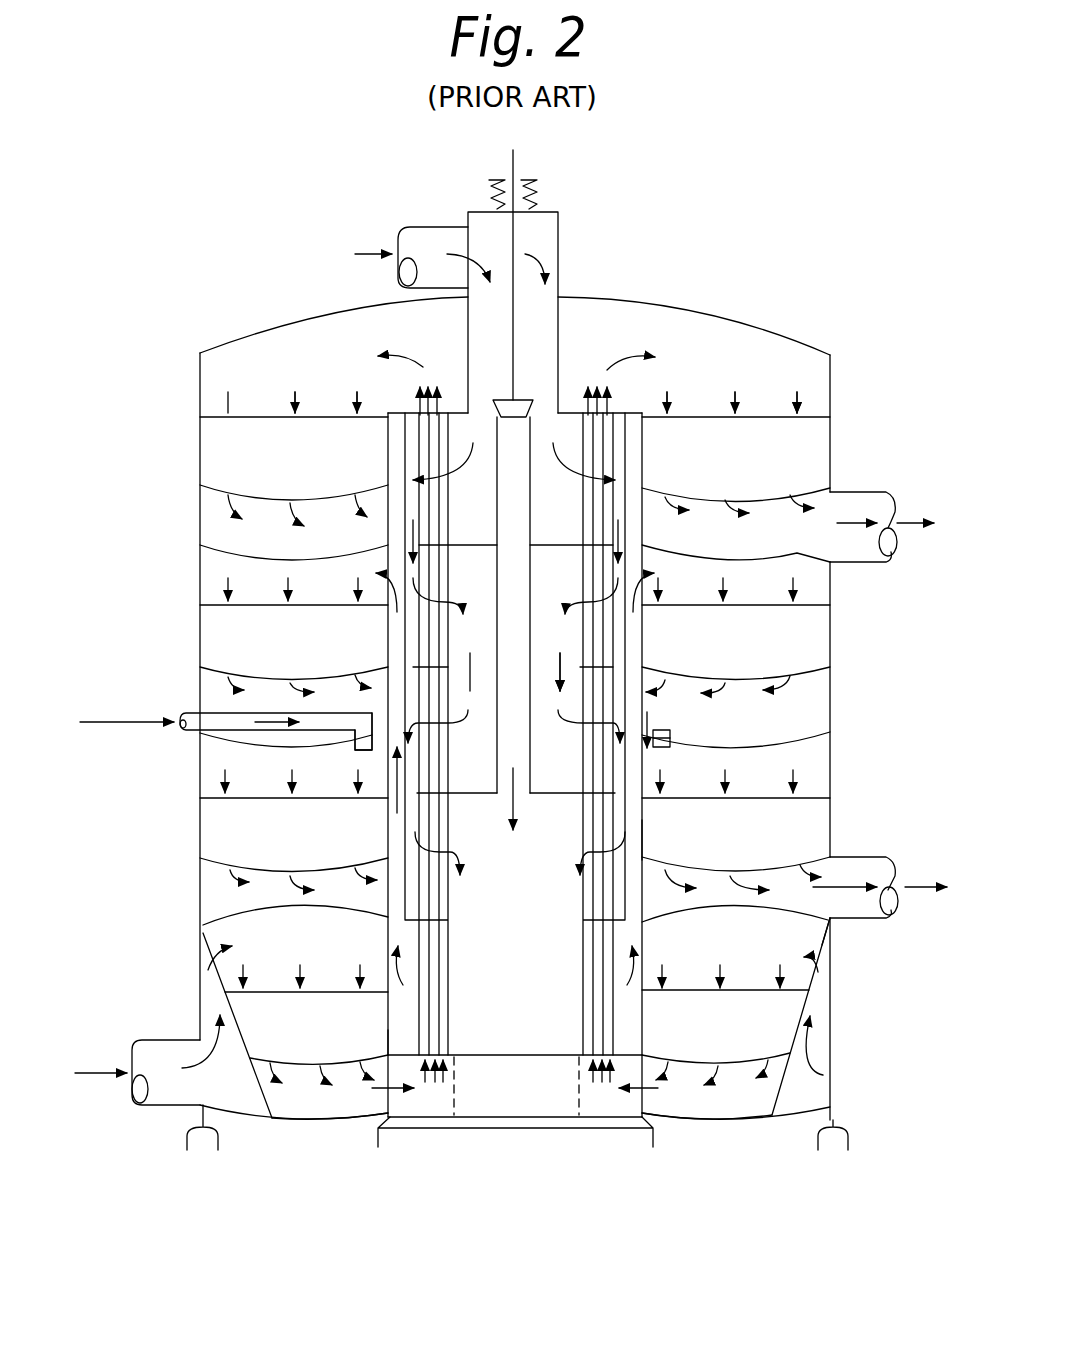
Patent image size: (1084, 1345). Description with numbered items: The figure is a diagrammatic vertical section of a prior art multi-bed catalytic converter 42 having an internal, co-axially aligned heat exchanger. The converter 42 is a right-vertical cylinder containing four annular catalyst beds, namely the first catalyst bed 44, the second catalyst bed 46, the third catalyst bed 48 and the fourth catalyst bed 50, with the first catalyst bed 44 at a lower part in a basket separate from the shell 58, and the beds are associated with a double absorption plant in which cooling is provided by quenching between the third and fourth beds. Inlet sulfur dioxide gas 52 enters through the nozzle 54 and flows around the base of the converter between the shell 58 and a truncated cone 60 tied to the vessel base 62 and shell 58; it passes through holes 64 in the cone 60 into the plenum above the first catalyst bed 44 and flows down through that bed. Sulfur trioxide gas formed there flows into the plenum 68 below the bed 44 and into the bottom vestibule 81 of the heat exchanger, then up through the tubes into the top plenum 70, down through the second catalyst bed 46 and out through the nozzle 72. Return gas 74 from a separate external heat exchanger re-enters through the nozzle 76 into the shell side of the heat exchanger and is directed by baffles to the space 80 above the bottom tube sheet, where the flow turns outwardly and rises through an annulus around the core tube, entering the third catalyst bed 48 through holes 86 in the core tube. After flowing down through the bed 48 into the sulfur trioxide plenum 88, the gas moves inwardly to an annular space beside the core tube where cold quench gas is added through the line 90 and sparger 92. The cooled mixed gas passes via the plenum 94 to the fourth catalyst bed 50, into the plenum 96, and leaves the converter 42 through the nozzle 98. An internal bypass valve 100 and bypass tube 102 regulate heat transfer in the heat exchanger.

The converter 42 is at (702, 310).
The first catalyst bed 44 is at (742, 1017).
The second catalyst bed 46 is at (750, 450).
The third catalyst bed 48 is at (748, 642).
The fourth catalyst bed 50 is at (758, 833).
The inlet sulfur dioxide gas 52 is at (102, 1067).
The nozzle 54 is at (166, 1037).
The shell 58 is at (833, 1033).
The truncated cone 60 is at (788, 1090).
The vessel base 62 is at (335, 1120).
The holes 64 is at (818, 962).
The plenum 68 is at (728, 1100).
The top plenum 70 is at (727, 368).
The nozzle 72 is at (880, 492).
The return gas 74 is at (368, 250).
The nozzle 76 is at (436, 226).
The space 80 is at (517, 1038).
The bottom vestibule 81 is at (600, 1102).
The holes 86 is at (645, 560).
The sulfur trioxide plenum 88 is at (770, 720).
The line 90 is at (185, 712).
The sparger 92 is at (355, 746).
The plenum 94 is at (257, 758).
The plenum 96 is at (277, 903).
The nozzle 98 is at (885, 855).
The internal bypass valve 100 is at (498, 396).
The bypass tube 102 is at (533, 472).